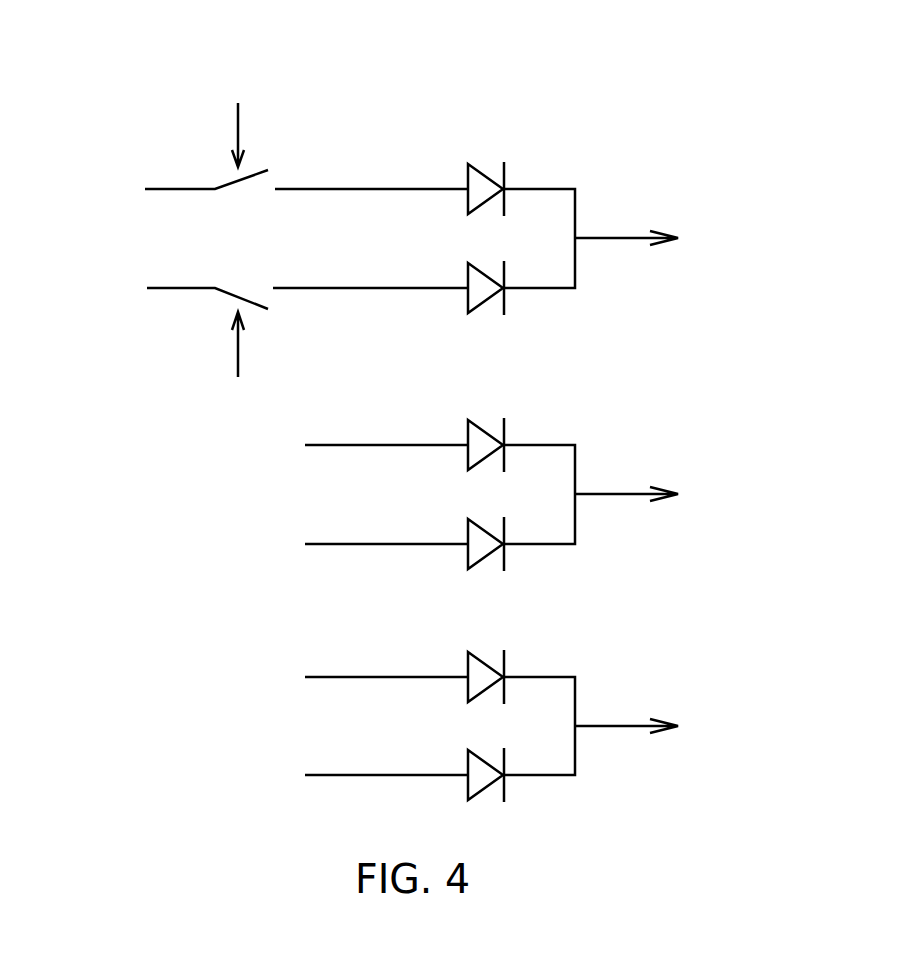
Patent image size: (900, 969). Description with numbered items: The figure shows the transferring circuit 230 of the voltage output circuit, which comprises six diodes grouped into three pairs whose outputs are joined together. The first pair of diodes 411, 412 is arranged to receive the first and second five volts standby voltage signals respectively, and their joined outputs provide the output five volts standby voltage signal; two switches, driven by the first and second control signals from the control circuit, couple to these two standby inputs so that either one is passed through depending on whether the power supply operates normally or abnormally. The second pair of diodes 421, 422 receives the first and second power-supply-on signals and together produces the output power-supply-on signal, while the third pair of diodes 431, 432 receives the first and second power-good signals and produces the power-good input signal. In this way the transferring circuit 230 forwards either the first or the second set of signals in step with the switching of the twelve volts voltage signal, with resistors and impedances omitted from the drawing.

The transferring circuit 230 is at (768, 84).
The diode 411 is at (465, 178).
The diode 412 is at (465, 277).
The diode 421 is at (465, 434).
The diode 422 is at (465, 533).
The diode 431 is at (465, 666).
The diode 432 is at (465, 764).